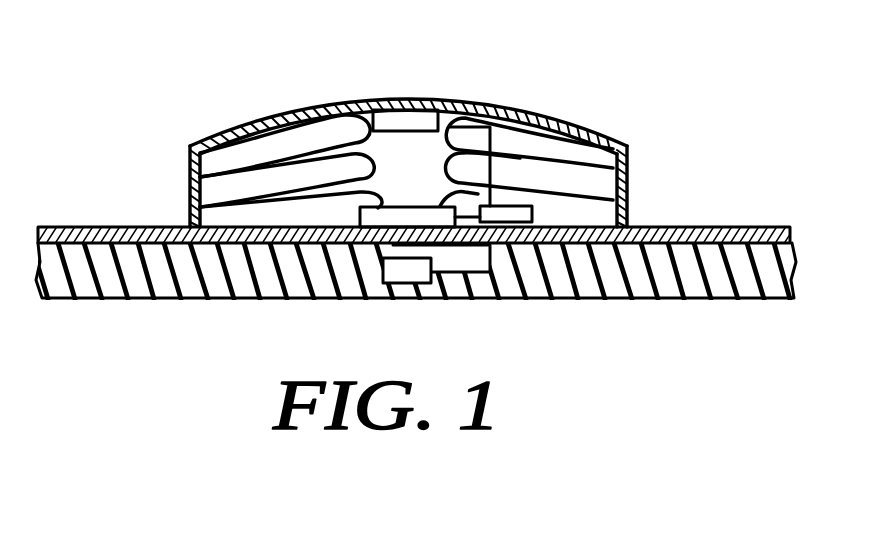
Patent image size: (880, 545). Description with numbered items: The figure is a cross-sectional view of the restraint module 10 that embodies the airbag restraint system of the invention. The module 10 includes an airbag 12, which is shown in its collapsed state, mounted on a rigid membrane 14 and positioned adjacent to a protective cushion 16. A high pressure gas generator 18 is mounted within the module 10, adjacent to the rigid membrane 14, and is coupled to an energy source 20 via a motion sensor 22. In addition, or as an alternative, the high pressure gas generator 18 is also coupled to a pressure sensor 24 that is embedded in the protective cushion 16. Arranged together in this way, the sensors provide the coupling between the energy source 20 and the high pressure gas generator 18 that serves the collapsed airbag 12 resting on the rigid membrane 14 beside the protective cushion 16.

The restraint module 10 is at (585, 104).
The airbag 12 is at (597, 161).
The rigid membrane 14 is at (720, 228).
The protective cushion 16 is at (628, 258).
The high pressure gas generator 18 is at (378, 217).
The energy source 20 is at (513, 217).
The motion sensor 22 is at (407, 120).
The pressure sensor 24 is at (410, 273).